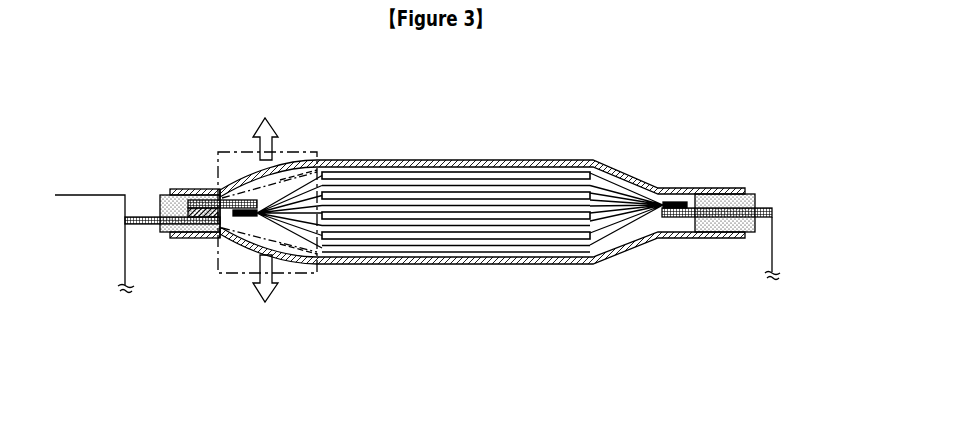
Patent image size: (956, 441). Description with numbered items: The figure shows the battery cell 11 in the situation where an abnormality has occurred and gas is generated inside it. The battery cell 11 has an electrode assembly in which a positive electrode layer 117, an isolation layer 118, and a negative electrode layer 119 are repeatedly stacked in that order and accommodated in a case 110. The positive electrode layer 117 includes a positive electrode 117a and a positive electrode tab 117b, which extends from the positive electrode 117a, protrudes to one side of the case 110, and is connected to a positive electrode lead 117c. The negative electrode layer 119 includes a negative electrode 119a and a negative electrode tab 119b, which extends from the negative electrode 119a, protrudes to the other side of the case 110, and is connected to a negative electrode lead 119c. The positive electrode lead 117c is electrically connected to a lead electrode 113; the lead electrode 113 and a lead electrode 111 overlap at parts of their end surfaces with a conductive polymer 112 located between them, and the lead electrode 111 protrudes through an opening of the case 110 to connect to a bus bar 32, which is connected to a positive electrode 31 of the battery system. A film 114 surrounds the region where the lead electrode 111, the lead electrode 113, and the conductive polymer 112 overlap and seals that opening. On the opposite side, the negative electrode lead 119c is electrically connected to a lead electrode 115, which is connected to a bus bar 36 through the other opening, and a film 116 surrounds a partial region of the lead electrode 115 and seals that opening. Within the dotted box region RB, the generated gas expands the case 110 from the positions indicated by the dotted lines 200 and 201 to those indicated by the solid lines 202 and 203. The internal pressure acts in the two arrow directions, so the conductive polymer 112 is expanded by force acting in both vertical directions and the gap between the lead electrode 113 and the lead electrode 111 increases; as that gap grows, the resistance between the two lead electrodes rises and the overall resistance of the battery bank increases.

The battery cell 11 is at (611, 143).
The positive electrode 31 is at (80, 194).
The bus bar 32 is at (130, 257).
The bus bar 36 is at (773, 245).
The case 110 is at (390, 160).
The lead electrode 111 is at (138, 216).
The conductive polymer 112 is at (195, 218).
The lead electrode 113 is at (237, 200).
The film 114 is at (165, 189).
The lead electrode 115 is at (766, 208).
The film 116 is at (750, 194).
The positive electrode layer 117 is at (456, 290).
The positive electrode 117a is at (375, 252).
The positive electrode tab 117b is at (387, 347).
The positive electrode lead 117c is at (240, 218).
The isolation layer 118 is at (593, 264).
The negative electrode layer 119 is at (492, 282).
The negative electrode 119a is at (450, 240).
The negative electrode tab 119b is at (623, 223).
The negative electrode lead 119c is at (677, 201).
The dotted line 200 is at (288, 163).
The dotted line 201 is at (278, 258).
The solid line 202 is at (299, 161).
The solid line 203 is at (298, 264).
The dotted box region RB is at (218, 152).